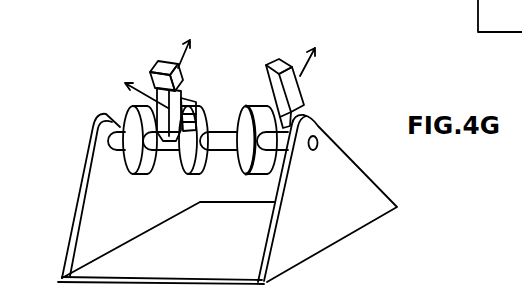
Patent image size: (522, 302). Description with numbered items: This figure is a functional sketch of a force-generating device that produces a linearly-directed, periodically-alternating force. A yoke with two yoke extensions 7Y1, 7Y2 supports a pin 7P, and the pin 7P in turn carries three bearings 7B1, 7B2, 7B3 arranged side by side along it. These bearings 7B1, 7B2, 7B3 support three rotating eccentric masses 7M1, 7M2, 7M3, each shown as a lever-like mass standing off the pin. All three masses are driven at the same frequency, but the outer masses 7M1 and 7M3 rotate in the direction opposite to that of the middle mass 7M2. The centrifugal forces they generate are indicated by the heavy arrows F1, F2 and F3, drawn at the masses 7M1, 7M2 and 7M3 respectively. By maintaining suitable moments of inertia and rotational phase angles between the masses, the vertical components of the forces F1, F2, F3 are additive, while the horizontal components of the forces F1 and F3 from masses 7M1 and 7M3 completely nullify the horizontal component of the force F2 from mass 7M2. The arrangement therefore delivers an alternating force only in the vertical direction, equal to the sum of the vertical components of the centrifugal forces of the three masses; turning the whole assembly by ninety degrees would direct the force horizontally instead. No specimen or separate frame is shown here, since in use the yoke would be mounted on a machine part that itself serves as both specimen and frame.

The yoke extension 7Y1 is at (327, 198).
The yoke extension 7Y2 is at (166, 199).
The pin 7P is at (318, 144).
The bearing 7B1 is at (136, 174).
The bearing 7B2 is at (165, 166).
The bearing 7B3 is at (250, 175).
The eccentric mass 7M1 is at (148, 60).
The eccentric mass 7M2 is at (188, 97).
The eccentric mass 7M3 is at (305, 87).
The centrifugal force F1 is at (196, 42).
The centrifugal force F2 is at (133, 80).
The centrifugal force F3 is at (317, 47).